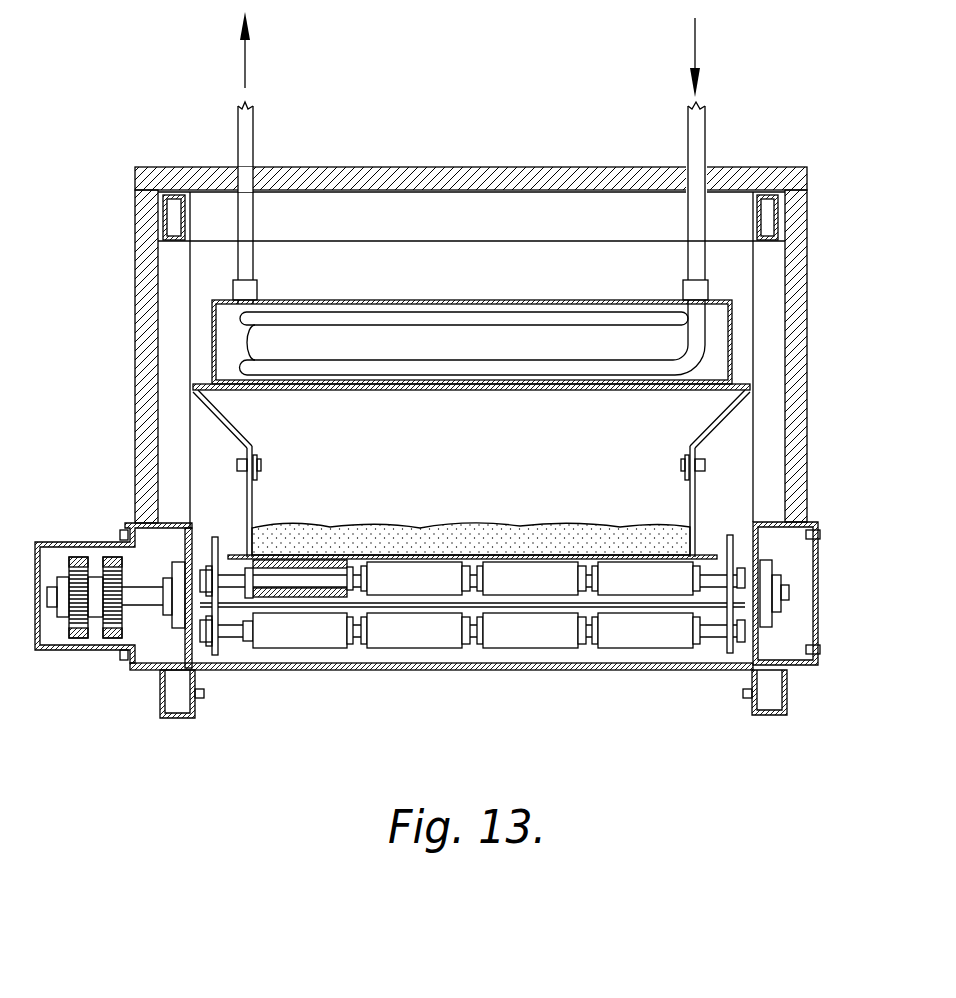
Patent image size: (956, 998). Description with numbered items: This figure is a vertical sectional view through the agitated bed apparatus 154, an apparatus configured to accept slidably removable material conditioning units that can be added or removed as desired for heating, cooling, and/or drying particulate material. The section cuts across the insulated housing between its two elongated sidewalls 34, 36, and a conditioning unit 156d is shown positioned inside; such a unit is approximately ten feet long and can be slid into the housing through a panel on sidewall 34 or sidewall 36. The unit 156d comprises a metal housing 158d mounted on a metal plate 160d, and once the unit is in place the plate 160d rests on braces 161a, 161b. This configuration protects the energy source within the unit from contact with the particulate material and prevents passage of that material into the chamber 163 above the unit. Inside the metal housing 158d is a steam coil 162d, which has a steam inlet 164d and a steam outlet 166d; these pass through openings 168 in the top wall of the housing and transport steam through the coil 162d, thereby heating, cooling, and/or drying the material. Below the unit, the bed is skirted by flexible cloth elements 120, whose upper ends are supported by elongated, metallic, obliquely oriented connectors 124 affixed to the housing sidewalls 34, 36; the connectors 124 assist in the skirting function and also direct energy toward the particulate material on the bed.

The agitated bed apparatus 154 is at (787, 149).
The sidewall 34 is at (795, 372).
The sidewall 36 is at (148, 368).
The chamber 163 is at (505, 258).
The steam outlet 166d is at (248, 122).
The steam inlet 164d is at (697, 118).
The opening 168 is at (685, 168).
The material conditioning unit 156d is at (546, 294).
The metal housing 158d is at (732, 318).
The steam coil 162d is at (538, 318).
The metal plate 160d is at (382, 391).
The brace 161a is at (237, 392).
The brace 161b is at (710, 390).
The connector 124 is at (695, 442).
The cloth element 120 is at (690, 500).